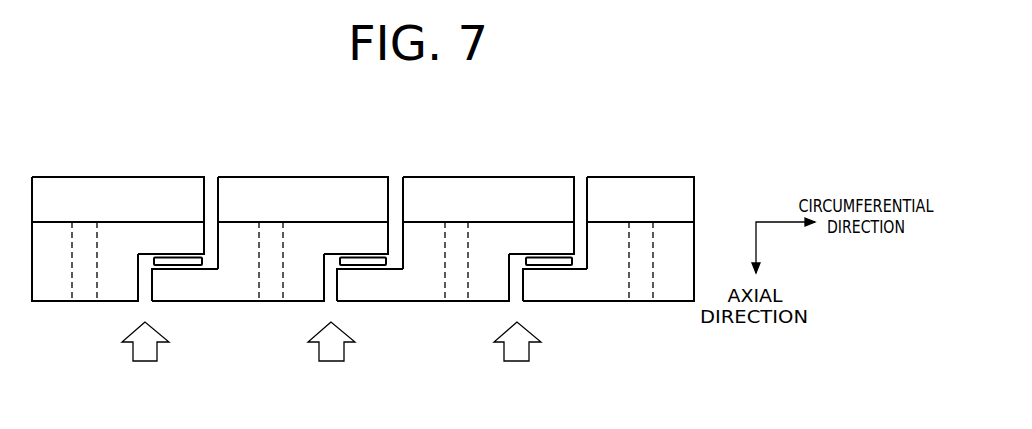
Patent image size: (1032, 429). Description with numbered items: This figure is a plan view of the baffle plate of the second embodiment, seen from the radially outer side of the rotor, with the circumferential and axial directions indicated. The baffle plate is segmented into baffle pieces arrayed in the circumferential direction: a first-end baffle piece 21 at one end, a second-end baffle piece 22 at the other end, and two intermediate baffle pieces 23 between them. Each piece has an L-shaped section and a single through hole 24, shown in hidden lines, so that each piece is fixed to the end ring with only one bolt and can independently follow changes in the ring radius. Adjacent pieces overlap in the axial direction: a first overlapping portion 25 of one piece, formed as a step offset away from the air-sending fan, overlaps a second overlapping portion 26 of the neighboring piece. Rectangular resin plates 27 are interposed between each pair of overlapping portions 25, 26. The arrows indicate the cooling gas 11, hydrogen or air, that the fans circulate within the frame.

The cooling gas 11 is at (528, 353).
The first-end baffle piece 21 is at (122, 197).
The second-end baffle piece 22 is at (643, 197).
The intermediate baffle piece 23 is at (242, 200).
The through hole 24 is at (70, 282).
The first overlapping portion 25 is at (175, 233).
The second overlapping portion 26 is at (187, 291).
The resin plate 27 is at (354, 257).